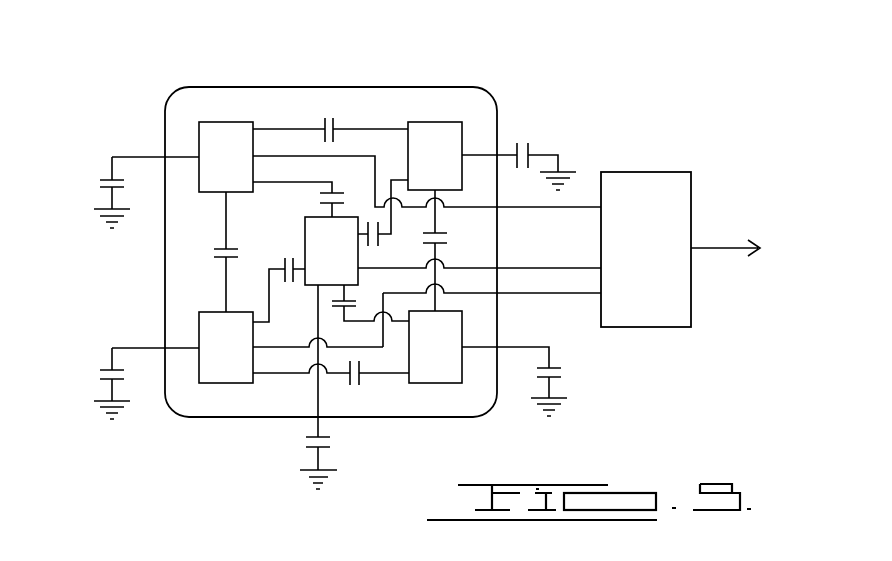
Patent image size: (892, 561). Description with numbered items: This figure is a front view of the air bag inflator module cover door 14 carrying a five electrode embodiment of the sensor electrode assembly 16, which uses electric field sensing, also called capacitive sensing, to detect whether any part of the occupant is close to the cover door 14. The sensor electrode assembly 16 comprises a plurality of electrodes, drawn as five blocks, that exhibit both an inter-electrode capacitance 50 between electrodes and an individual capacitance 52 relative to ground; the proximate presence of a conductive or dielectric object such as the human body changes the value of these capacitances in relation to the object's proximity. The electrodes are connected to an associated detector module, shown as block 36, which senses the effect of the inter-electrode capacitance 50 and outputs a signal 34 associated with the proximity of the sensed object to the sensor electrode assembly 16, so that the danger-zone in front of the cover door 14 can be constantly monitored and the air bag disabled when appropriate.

The air bag inflator module cover door 14 is at (164, 298).
The sensor electrode assembly 16 is at (242, 170).
The signal 34 is at (747, 251).
The signal combiner circuit 36 is at (663, 261).
The inter-electrode capacitance 50 is at (330, 115).
The individual capacitance 52 is at (97, 182).